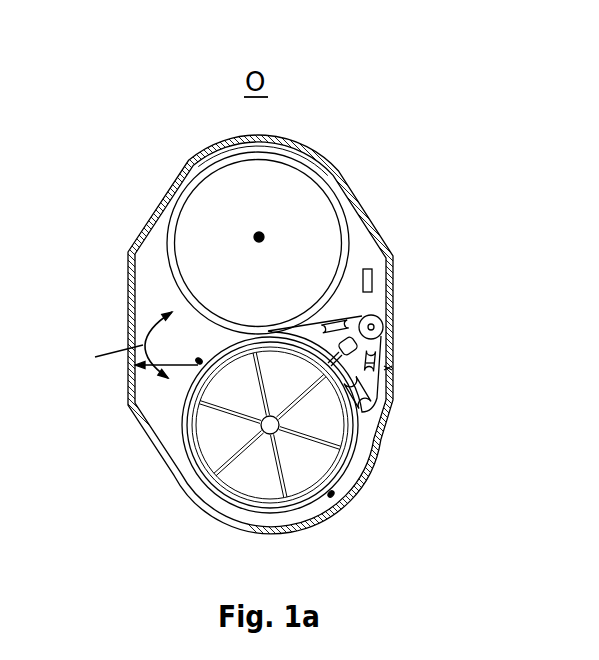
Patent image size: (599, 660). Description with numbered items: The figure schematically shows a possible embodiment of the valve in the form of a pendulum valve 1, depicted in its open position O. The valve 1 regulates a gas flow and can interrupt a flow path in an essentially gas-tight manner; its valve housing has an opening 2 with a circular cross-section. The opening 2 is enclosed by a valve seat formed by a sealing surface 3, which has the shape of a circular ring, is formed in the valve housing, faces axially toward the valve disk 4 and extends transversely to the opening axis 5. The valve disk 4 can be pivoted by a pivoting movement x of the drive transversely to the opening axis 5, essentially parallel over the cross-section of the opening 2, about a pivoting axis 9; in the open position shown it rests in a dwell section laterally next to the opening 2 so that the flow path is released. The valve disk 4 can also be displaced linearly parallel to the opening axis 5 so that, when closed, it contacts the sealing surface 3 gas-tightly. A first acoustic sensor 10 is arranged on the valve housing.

The pendulum valve 1 is at (299, 307).
The opening 2 is at (268, 229).
The sealing surface 3 is at (299, 337).
The valve disk 4 is at (228, 425).
The opening axis 5 is at (335, 216).
The pivoting axis 9 is at (365, 363).
The first acoustic sensor 10 is at (416, 268).